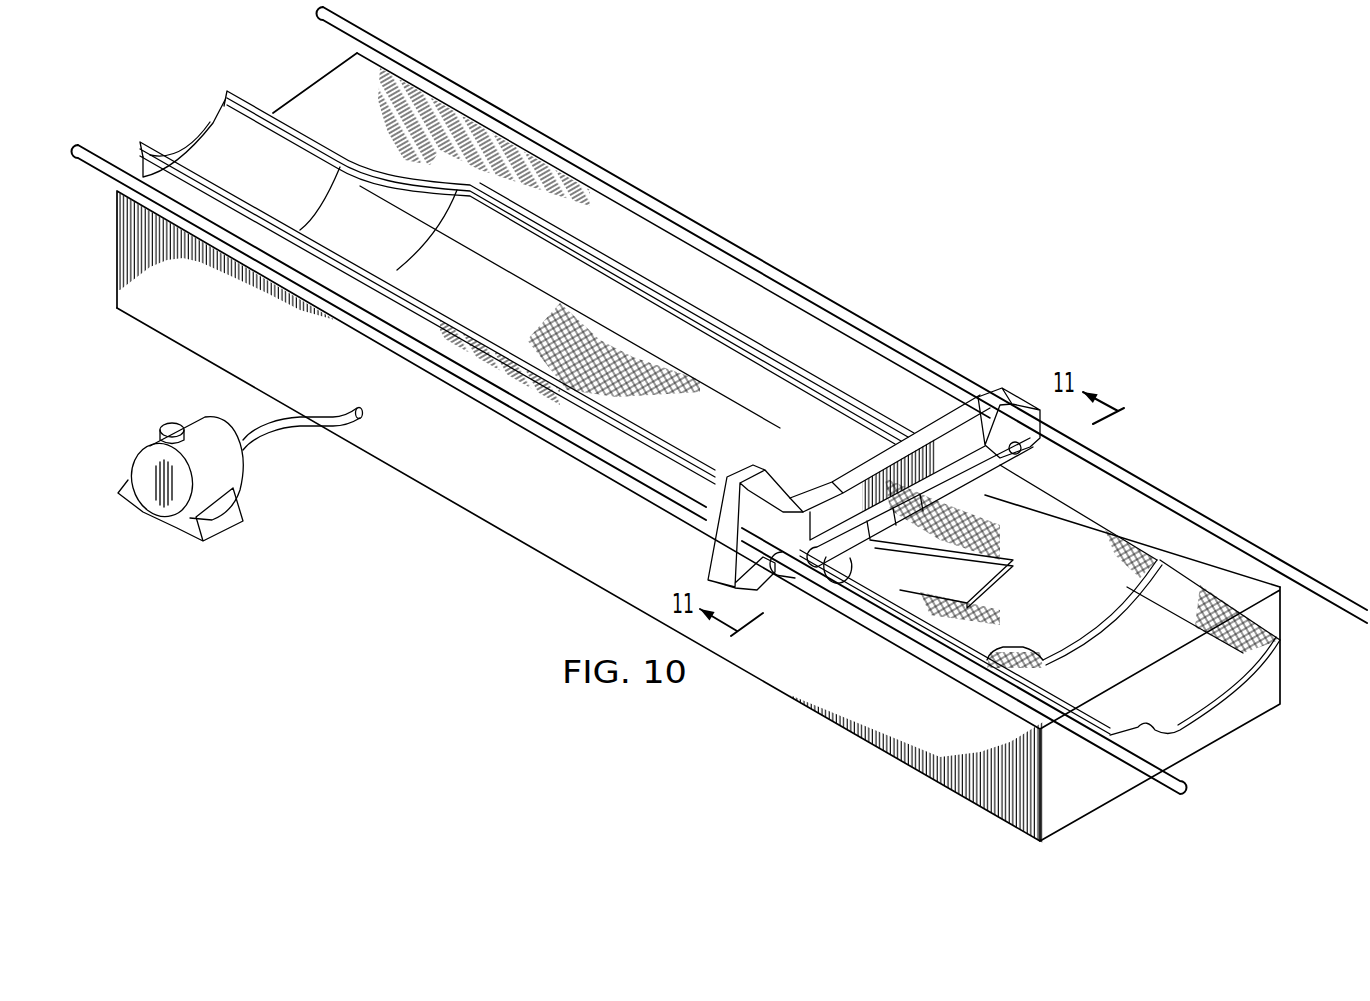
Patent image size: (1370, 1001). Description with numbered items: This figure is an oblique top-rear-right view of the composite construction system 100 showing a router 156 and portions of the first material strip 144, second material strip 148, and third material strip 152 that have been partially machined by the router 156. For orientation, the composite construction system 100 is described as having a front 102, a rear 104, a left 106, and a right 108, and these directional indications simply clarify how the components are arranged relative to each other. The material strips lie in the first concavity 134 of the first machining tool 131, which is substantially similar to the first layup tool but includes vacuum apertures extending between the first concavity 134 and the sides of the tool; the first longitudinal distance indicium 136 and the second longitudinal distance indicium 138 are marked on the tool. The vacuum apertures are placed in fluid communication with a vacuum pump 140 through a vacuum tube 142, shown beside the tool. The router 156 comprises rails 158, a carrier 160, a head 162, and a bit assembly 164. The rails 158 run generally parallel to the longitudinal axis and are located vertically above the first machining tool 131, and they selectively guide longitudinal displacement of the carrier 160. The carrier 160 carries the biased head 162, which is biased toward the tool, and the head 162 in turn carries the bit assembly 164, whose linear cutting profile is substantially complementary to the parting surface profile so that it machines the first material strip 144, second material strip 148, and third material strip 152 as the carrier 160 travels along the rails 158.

The composite construction system 100 is at (1007, 158).
The front 102 is at (248, 75).
The rear 104 is at (1233, 785).
The left 106 is at (905, 278).
The right 108 is at (507, 577).
The first machining tool 131 is at (620, 590).
The first concavity 134 is at (346, 158).
The first longitudinal distance indicium 136 is at (1175, 550).
The second longitudinal distance indicium 138 is at (1085, 497).
The vacuum pump 140 is at (200, 422).
The vacuum tube 142 is at (300, 437).
The first material strip 144 is at (1210, 693).
The second material strip 148 is at (1067, 630).
The third material strip 152 is at (973, 580).
The router 156 is at (1030, 392).
The rails 158 is at (1320, 580).
The carrier 160 is at (883, 457).
The head 162 is at (837, 593).
The bit assembly 164 is at (887, 517).